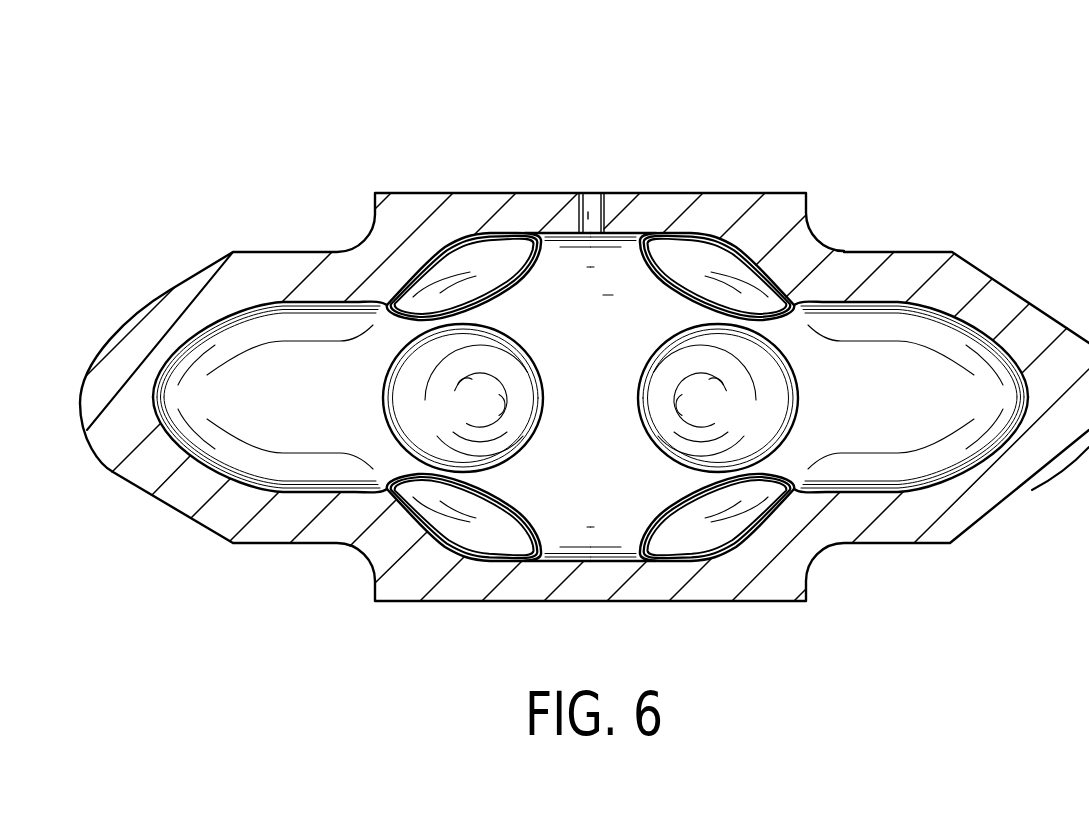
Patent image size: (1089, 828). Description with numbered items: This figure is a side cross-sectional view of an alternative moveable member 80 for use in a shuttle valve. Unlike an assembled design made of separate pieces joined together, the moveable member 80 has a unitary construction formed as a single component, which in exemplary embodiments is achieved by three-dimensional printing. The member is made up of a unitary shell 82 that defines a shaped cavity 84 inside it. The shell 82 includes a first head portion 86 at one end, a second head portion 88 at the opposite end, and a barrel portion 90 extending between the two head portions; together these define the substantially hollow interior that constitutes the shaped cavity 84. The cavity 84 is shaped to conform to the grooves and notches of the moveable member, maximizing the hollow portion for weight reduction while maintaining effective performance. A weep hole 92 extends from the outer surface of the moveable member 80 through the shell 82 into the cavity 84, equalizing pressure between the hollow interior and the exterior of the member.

The moveable member 80 is at (703, 83).
The unitary shell 82 is at (468, 193).
The shaped cavity 84 is at (560, 268).
The first head portion 86 is at (185, 303).
The second head portion 88 is at (1001, 298).
The barrel portion 90 is at (777, 208).
The weep hole 92 is at (588, 203).